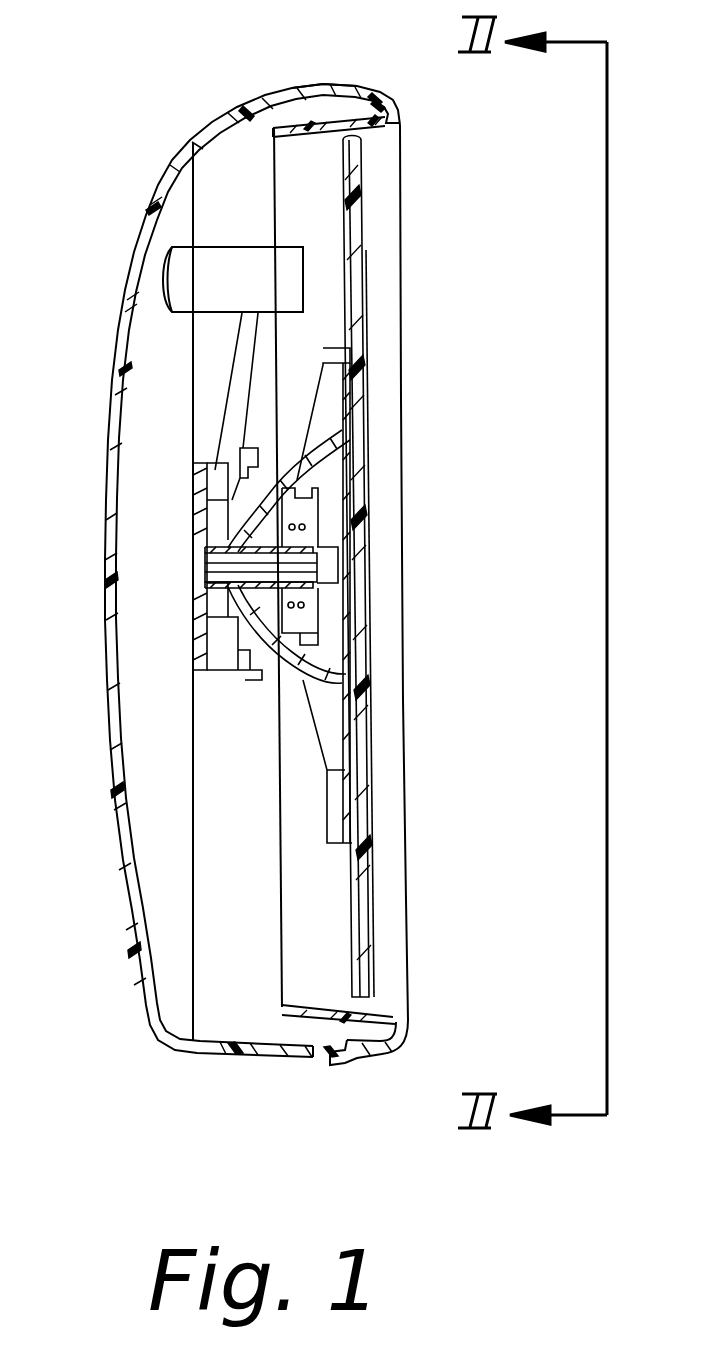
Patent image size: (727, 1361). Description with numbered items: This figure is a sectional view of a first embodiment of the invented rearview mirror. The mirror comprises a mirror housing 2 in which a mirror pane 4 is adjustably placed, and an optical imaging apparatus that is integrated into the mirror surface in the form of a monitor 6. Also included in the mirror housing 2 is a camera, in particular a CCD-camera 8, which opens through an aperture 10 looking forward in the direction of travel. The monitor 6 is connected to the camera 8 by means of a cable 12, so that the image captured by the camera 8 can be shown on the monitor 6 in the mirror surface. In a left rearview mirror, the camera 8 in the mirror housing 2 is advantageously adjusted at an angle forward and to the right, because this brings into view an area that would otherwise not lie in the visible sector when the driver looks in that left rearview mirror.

The mirror housing 2 is at (318, 84).
The mirror pane 4 is at (357, 208).
The monitor 6 is at (375, 907).
The CCD-camera 8 is at (246, 297).
The aperture 10 is at (125, 277).
The cable 12 is at (227, 423).